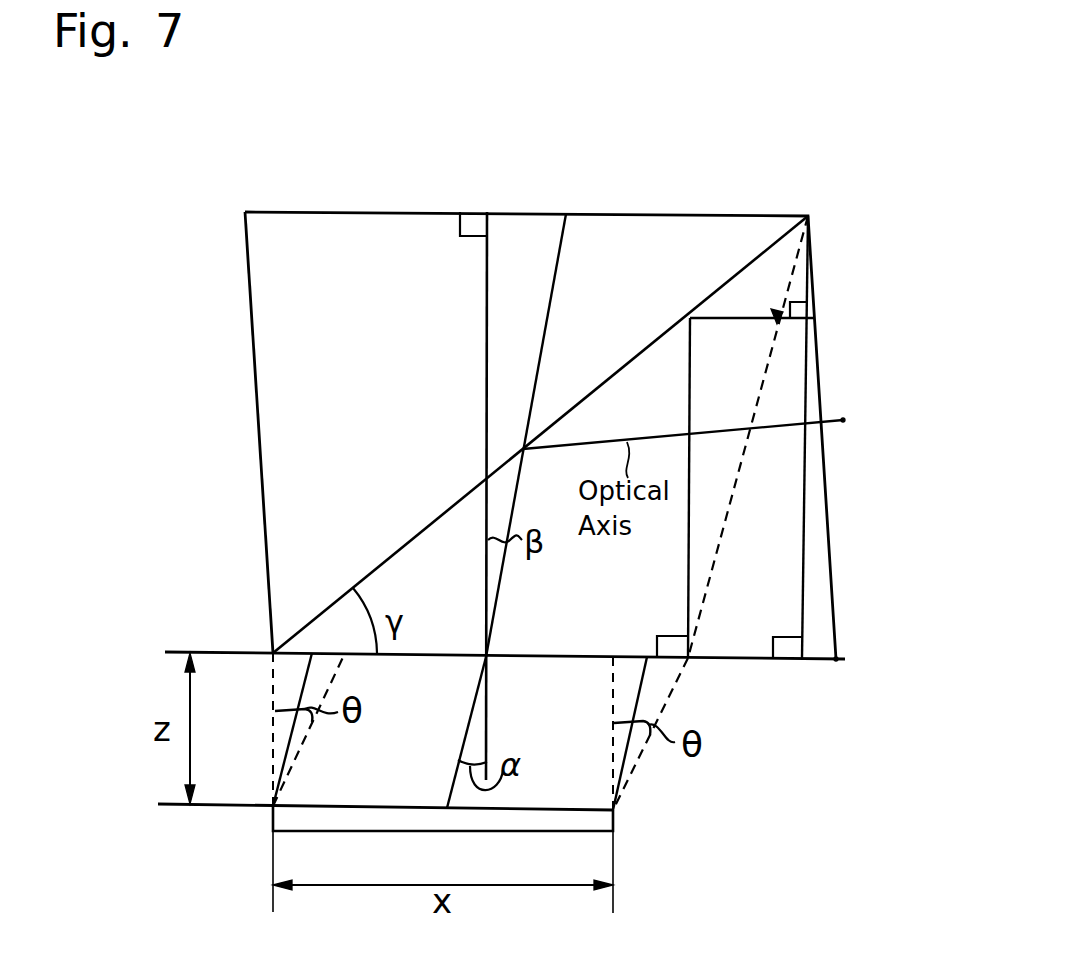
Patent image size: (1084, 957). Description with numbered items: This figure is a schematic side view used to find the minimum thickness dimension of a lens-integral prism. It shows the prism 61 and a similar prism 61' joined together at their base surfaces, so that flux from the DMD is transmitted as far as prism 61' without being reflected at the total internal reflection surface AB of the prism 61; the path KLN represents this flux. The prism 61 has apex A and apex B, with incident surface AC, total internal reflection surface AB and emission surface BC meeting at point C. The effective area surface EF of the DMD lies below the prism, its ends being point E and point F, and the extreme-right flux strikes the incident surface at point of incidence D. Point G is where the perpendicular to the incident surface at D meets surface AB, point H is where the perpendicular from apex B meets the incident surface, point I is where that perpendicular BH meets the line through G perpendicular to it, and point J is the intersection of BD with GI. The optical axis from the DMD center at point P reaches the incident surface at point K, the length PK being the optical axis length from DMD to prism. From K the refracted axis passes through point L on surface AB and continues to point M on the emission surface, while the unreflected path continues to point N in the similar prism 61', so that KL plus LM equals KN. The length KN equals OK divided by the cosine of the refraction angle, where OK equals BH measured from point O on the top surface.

The prism 61 is at (559, 435).
The similar prism 61' is at (200, 432).
The apex A of the prism A is at (268, 650).
The apex B of the prism B is at (808, 214).
The point C is at (838, 661).
The point of incidence D is at (689, 662).
The point E is at (270, 810).
The point F is at (616, 813).
The point G is at (690, 316).
The point H is at (802, 662).
The point I is at (816, 322).
The point J is at (777, 322).
The point K is at (494, 655).
The point L is at (526, 455).
The point M is at (860, 418).
The point N is at (566, 214).
The point O is at (487, 212).
The point P is at (447, 808).